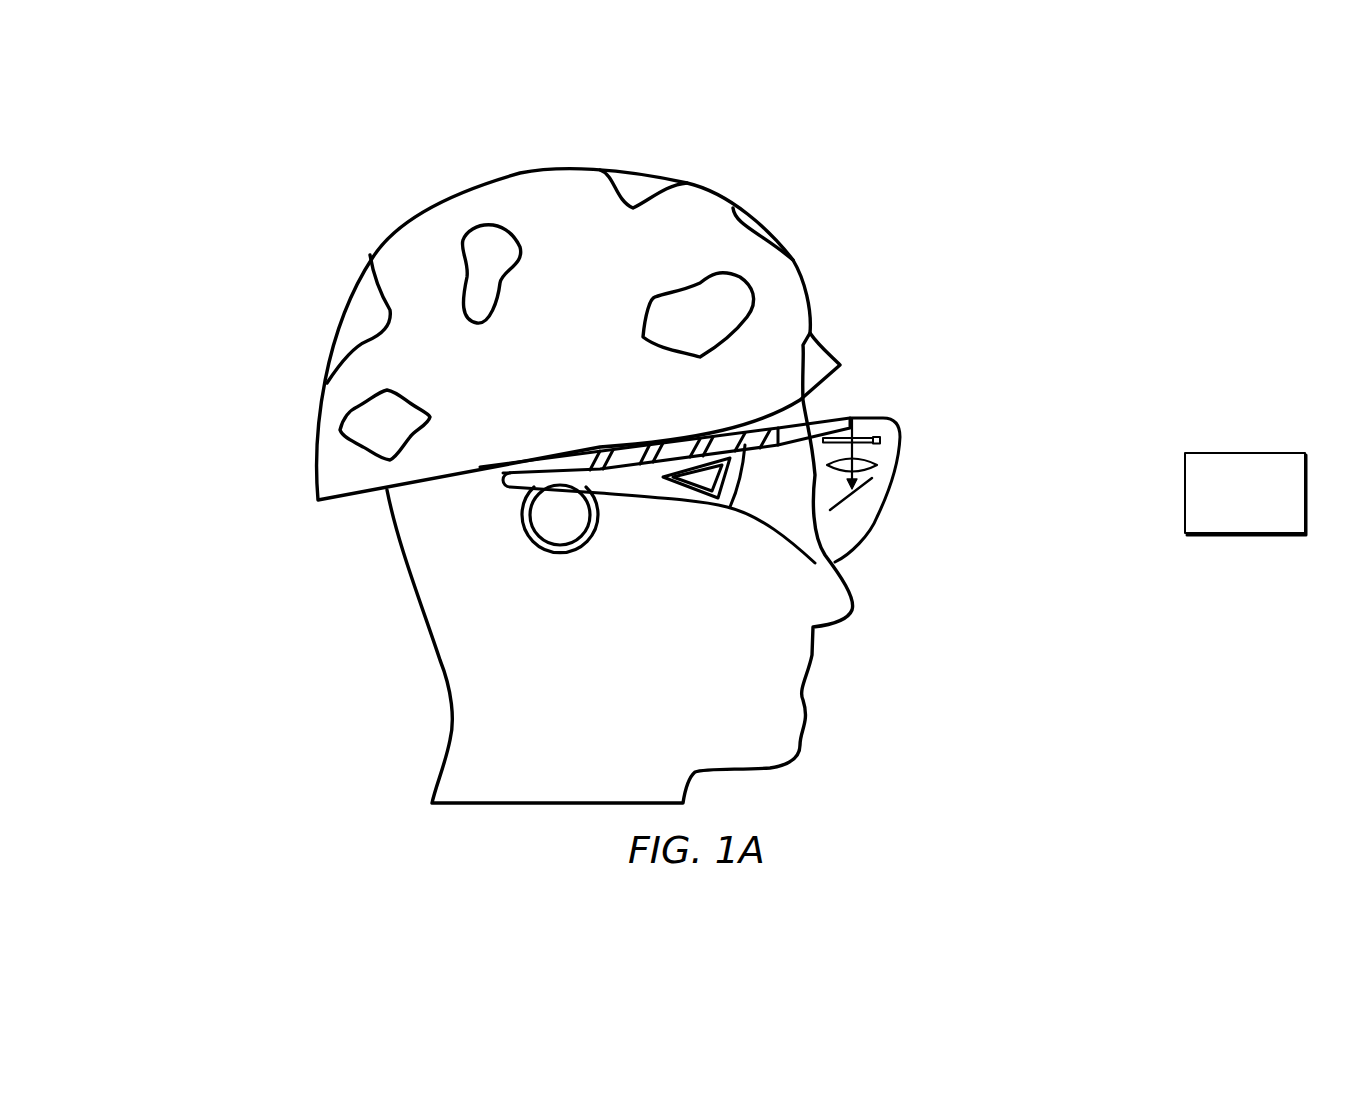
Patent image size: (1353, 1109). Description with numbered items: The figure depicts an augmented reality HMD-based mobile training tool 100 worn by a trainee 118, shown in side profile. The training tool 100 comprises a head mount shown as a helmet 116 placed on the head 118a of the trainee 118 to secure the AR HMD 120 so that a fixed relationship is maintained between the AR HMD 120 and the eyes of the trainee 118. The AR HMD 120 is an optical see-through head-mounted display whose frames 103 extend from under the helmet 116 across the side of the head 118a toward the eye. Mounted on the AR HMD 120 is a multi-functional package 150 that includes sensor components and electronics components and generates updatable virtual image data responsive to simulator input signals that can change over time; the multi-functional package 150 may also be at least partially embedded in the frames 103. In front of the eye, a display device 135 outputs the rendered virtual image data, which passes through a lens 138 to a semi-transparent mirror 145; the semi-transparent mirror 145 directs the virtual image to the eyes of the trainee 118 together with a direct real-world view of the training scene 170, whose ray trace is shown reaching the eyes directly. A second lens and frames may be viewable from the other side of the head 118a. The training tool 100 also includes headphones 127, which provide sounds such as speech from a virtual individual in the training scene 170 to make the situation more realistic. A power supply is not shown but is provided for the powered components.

The training tool 100 is at (677, 403).
The frames 103 is at (643, 477).
The helmet 116 is at (353, 500).
The trainee 118 is at (535, 586).
The head 118a is at (447, 665).
The AR HMD 120 is at (759, 497).
The headphones 127 is at (530, 533).
The display device 135 is at (880, 440).
The lens 138 is at (878, 467).
The semi-transparent mirror 145 is at (971, 531).
The multi-functional package 150 is at (783, 421).
The training scene 170 is at (1185, 493).